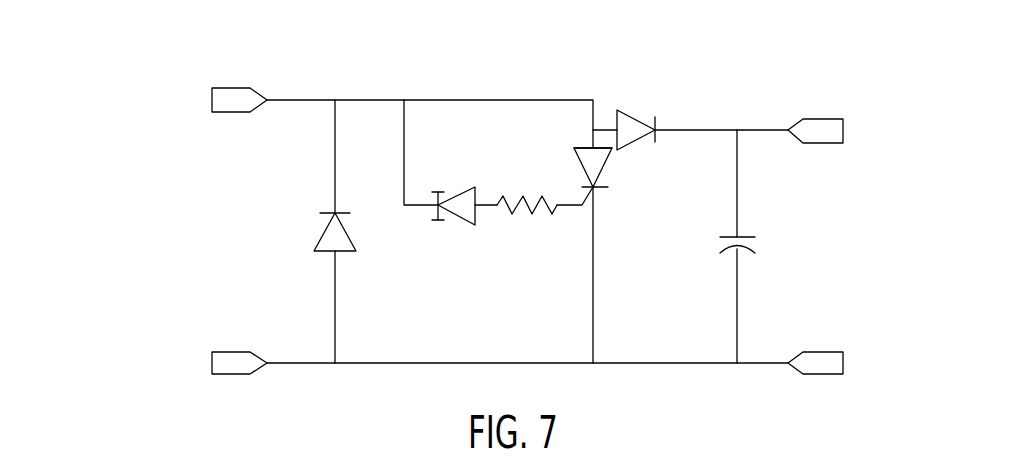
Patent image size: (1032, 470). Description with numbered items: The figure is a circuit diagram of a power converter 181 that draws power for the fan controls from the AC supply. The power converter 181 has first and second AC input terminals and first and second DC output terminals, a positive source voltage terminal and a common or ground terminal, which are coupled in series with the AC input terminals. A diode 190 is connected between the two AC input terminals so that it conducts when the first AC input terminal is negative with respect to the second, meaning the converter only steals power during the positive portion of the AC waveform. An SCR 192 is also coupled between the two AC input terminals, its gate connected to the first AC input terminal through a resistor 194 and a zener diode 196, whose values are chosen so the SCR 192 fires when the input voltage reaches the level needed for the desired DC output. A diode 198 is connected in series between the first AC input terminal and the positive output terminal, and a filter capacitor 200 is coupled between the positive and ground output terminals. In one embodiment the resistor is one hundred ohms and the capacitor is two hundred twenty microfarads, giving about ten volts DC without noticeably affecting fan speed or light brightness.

The power converter 181 is at (477, 240).
The diode 190 is at (294, 248).
The SCR 192 is at (633, 185).
The resistor 194 is at (502, 232).
The zener diode 196 is at (481, 185).
The diode 198 is at (664, 109).
The filter capacitor 200 is at (783, 226).